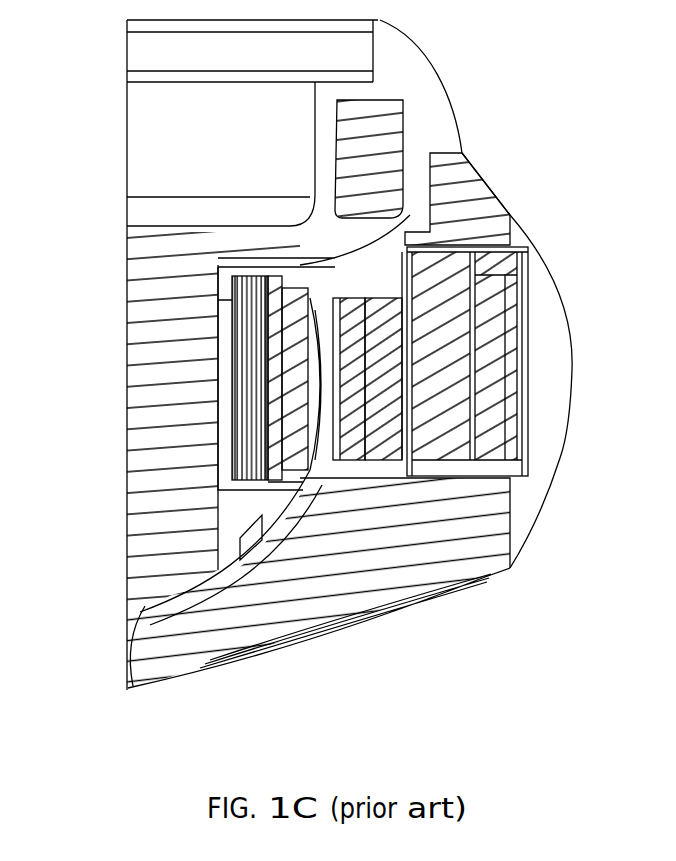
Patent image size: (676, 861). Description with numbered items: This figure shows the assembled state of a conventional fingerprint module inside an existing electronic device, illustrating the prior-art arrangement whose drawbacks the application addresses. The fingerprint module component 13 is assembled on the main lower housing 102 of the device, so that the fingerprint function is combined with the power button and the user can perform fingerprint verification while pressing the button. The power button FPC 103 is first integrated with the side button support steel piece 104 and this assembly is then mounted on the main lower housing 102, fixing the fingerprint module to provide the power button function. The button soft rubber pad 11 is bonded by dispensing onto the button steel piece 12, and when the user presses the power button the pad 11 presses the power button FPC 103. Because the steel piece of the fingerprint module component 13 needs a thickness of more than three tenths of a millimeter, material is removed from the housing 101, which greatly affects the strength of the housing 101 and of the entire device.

The main upper housing 101 is at (168, 257).
The main lower housing 102 is at (428, 508).
The power button FPC 103 is at (293, 412).
The side button support steel piece 104 is at (253, 350).
The button soft rubber pad 11 is at (347, 357).
The button steel piece 12 is at (380, 402).
The fingerprint module component 13 is at (430, 290).